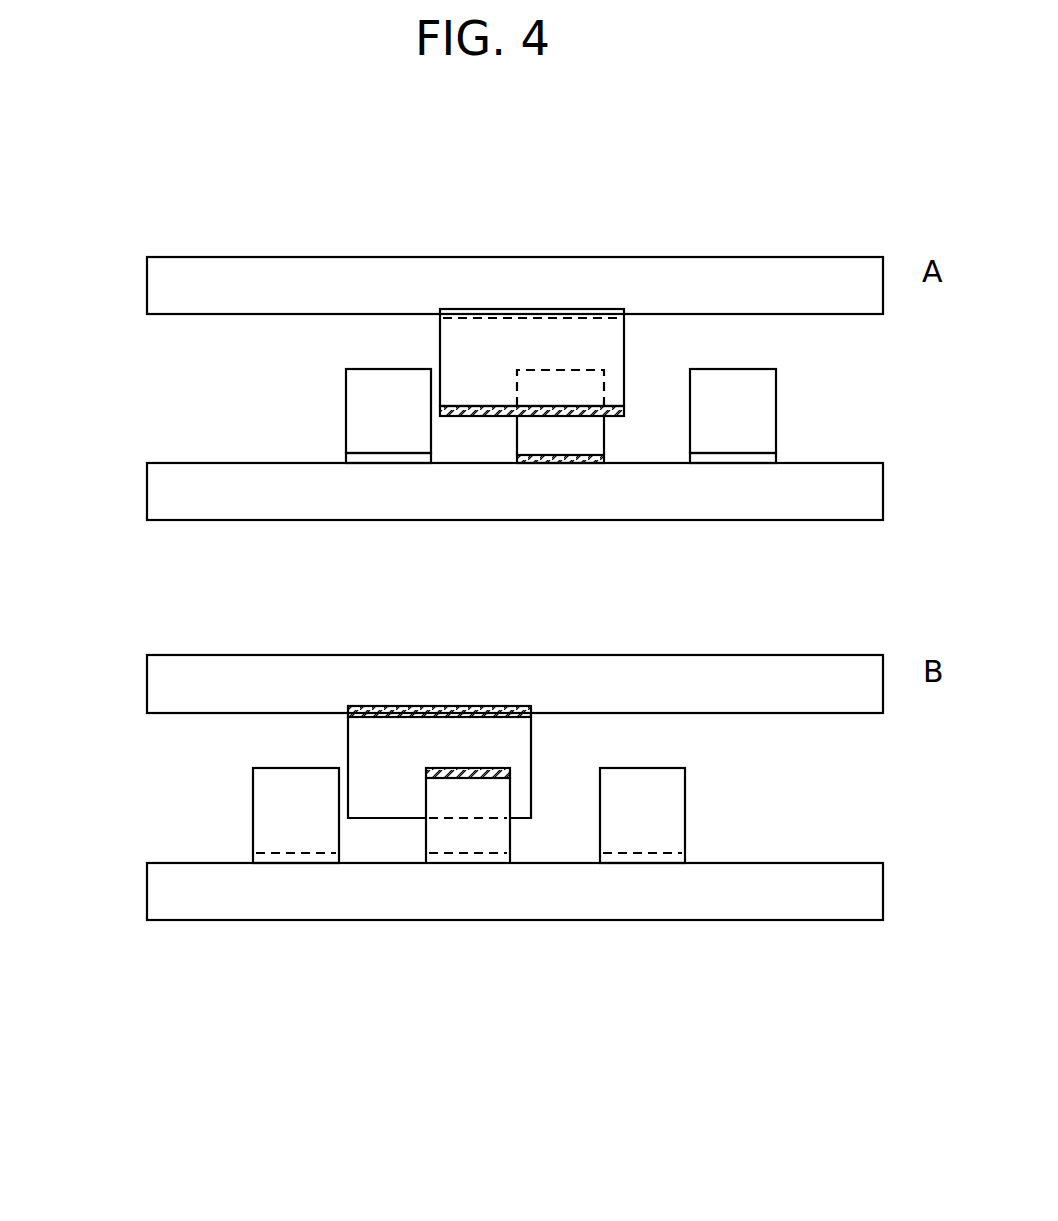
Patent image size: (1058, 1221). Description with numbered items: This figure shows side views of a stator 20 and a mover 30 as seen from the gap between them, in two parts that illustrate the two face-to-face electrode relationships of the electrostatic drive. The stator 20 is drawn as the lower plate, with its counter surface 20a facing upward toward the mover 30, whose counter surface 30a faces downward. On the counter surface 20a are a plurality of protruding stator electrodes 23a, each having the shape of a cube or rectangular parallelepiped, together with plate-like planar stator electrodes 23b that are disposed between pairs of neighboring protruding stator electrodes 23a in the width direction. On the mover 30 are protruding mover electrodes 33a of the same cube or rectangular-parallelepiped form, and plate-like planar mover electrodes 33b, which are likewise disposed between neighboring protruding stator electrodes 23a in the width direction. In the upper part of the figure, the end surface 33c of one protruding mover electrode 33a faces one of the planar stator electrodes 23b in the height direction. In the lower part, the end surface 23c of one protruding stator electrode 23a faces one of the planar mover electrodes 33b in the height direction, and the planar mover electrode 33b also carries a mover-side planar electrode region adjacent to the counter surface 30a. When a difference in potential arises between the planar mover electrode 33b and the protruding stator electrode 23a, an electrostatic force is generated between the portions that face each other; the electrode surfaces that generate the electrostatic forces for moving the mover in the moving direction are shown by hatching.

The stator 20 is at (175, 493).
The counter surface of the stator 20a is at (853, 463).
The mover 30 is at (175, 280).
The counter surface of the mover 30a is at (857, 314).
The protruding stator electrode 23a is at (386, 385).
The planar stator electrode 23b is at (372, 455).
The end surface of the protruding stator electrode 23c is at (663, 768).
The protruding mover electrode 33a is at (478, 353).
The planar mover electrode 33b is at (598, 318).
The end surface of the protruding mover electrode 33c is at (487, 418).